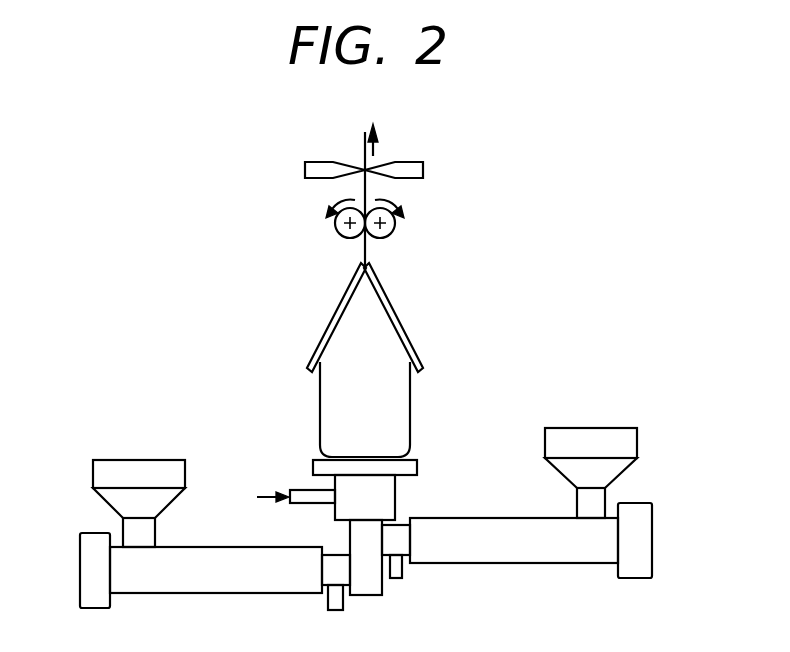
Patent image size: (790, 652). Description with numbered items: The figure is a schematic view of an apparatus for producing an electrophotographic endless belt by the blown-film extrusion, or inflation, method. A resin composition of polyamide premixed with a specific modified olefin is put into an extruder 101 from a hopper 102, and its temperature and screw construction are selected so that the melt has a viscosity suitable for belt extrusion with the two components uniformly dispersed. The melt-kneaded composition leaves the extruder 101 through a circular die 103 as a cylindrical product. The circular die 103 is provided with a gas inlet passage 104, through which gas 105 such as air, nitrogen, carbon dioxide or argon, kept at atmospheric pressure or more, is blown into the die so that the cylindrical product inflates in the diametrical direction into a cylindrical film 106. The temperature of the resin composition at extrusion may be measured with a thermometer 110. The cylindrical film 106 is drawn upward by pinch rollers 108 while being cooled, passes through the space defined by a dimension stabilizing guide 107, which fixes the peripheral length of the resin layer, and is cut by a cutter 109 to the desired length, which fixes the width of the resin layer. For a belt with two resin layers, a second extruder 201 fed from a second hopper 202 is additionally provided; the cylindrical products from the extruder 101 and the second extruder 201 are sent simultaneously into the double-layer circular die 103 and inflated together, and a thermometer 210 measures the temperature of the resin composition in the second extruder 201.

The extruder 101 is at (203, 556).
The hopper 102 is at (125, 458).
The circular die 103 is at (388, 503).
The gas inlet passage 104 is at (302, 491).
The gas 105 is at (263, 497).
The cylindrical film 106 is at (405, 405).
The dimension stabilizing guide 107 is at (400, 323).
The pinch rollers 108 is at (342, 232).
The cutter 109 is at (413, 173).
The thermometer 110 is at (343, 600).
The second extruder 201 is at (523, 523).
The second hopper 202 is at (600, 435).
The thermometer 210 is at (403, 570).